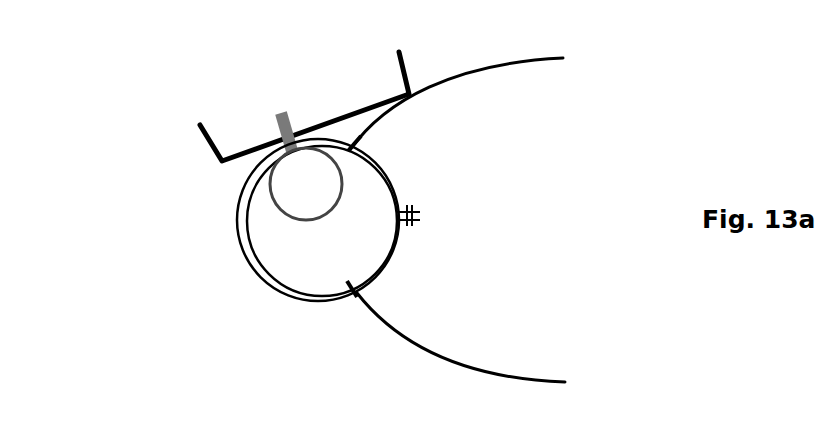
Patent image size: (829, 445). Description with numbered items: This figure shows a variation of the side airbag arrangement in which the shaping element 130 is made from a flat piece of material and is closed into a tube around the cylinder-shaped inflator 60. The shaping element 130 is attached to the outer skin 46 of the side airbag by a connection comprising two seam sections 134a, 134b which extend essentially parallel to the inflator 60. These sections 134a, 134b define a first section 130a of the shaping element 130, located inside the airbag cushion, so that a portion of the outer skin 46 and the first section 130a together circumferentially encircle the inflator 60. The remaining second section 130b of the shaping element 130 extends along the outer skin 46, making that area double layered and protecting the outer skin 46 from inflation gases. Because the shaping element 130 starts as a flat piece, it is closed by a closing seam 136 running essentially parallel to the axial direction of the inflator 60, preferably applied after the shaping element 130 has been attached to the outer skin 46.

The shaping element 130 is at (354, 157).
The first section of the shaping element 130a is at (395, 188).
The second section of the shaping element 130b is at (245, 248).
The inflator 60 is at (290, 185).
The first section of the seam 134a is at (348, 147).
The second section of the seam 134b is at (352, 304).
The closing seam 136 is at (412, 223).
The outer skin 46 is at (473, 368).